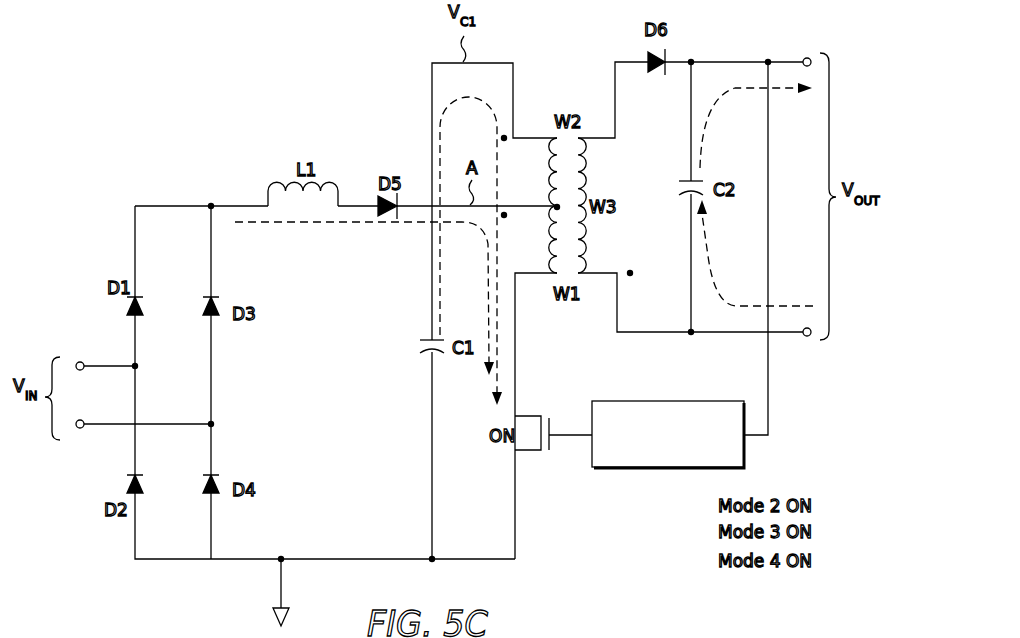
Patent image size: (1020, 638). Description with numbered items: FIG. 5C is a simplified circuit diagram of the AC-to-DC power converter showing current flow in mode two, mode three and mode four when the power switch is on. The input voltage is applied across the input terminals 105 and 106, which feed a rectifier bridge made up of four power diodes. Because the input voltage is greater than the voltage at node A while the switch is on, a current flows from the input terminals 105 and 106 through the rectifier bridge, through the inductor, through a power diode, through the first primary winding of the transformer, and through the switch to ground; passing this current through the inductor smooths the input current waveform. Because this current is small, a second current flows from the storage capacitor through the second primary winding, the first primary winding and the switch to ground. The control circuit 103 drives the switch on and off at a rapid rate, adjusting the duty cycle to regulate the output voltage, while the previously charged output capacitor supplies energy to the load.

The control circuit 103 is at (628, 468).
The input terminal 105 is at (81, 361).
The input terminal 106 is at (80, 429).